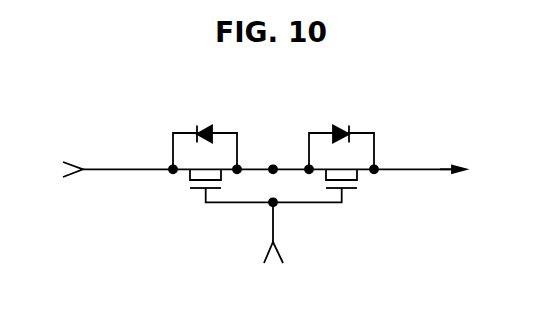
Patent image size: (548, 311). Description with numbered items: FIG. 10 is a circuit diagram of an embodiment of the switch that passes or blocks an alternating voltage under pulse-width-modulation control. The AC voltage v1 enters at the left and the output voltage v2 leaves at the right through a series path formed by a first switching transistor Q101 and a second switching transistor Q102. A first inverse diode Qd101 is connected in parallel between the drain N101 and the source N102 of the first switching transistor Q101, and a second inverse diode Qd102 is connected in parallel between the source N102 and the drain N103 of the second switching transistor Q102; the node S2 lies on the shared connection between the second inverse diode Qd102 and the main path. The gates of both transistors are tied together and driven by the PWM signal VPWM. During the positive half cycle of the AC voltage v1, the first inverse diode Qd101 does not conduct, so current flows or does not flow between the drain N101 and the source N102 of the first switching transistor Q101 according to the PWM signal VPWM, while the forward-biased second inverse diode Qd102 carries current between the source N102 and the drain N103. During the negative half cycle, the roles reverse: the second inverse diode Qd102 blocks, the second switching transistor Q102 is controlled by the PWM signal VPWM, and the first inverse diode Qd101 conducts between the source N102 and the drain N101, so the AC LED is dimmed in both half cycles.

The AC voltage v1 is at (61, 167).
The output voltage v2 is at (464, 169).
The first inverse diode Qd101 is at (205, 133).
The second inverse diode Qd102 is at (341, 133).
The first switching transistor Q101 is at (214, 188).
The second switching transistor Q102 is at (340, 188).
The drain of the first switching transistor N101 is at (152, 156).
The source of the first switching transistor N102 is at (277, 156).
The drain of the second switching transistor N103 is at (397, 156).
The switch node S2 is at (321, 157).
The PWM signal VPWM is at (274, 247).